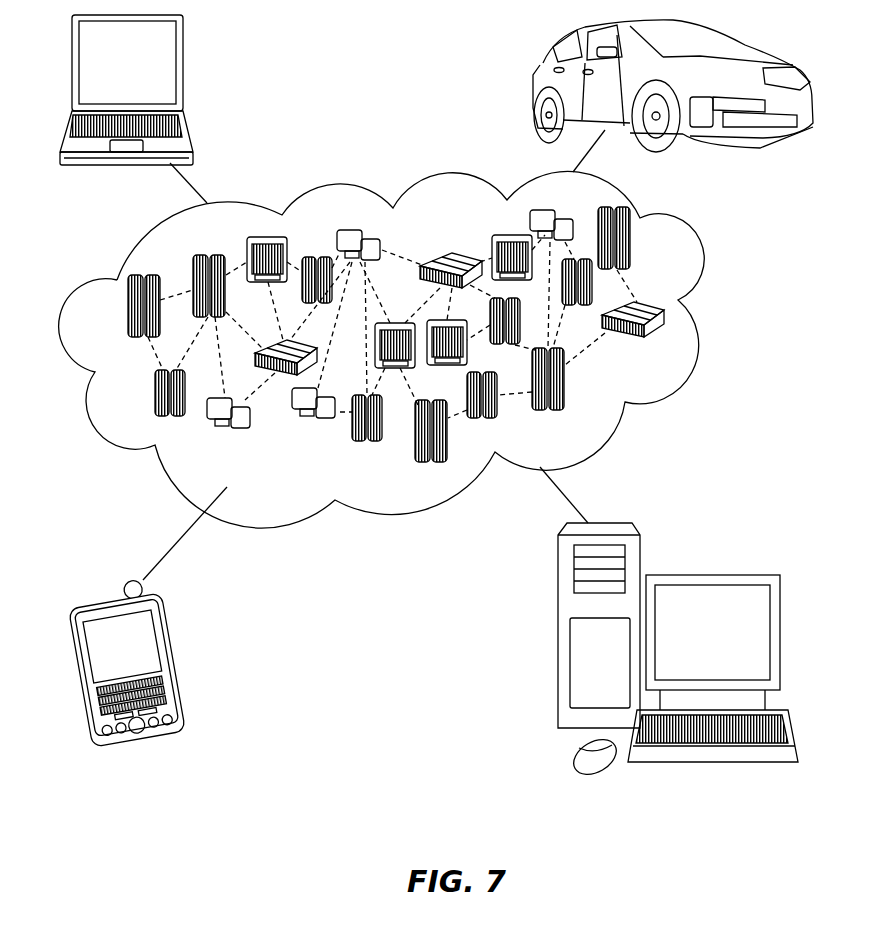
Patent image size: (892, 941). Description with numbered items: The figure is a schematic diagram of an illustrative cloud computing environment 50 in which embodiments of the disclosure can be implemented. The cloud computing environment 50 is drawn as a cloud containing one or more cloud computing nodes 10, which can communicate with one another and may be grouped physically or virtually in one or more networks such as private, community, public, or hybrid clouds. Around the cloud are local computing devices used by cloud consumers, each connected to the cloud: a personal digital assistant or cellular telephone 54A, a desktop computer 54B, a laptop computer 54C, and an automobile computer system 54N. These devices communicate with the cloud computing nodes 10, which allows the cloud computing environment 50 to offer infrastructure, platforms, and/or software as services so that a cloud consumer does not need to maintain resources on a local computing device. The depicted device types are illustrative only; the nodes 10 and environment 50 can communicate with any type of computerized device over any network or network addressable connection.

The cloud computing node 10 is at (674, 350).
The cloud computing environment 50 is at (715, 316).
The personal digital assistant or cellular telephone 54A is at (173, 660).
The desktop computer 54B is at (712, 575).
The laptop computer 54C is at (186, 70).
The automobile computer system 54N is at (535, 83).